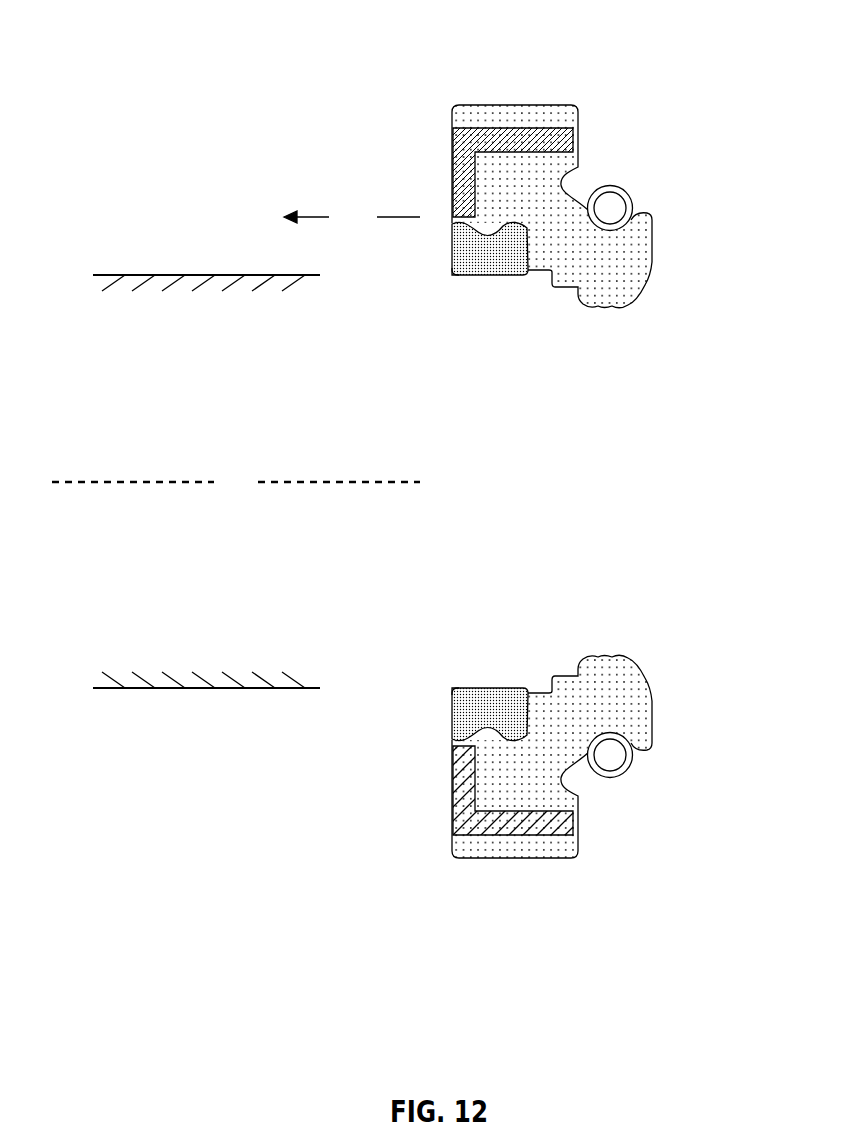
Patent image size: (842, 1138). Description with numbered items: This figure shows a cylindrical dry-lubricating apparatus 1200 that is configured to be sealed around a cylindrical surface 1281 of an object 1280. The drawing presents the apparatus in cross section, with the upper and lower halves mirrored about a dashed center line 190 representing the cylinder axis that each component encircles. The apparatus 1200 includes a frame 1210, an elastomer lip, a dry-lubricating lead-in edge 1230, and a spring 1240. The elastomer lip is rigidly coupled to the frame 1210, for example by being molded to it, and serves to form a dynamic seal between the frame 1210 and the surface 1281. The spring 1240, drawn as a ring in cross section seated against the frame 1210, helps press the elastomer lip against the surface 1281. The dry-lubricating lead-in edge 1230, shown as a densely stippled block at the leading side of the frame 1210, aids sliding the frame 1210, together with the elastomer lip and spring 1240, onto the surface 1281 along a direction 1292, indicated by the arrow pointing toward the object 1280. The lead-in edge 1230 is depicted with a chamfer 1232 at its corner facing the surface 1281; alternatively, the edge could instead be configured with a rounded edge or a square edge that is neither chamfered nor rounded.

The cylindrical dry-lubricating apparatus 1200 is at (690, 74).
The frame 1210 is at (453, 163).
The dry-lubricating lead-in edge 1230 is at (506, 264).
The chamfer 1232 is at (453, 275).
The spring 1240 is at (622, 188).
The object 1280 is at (205, 331).
The cylindrical surface 1281 is at (200, 273).
The direction 1292 is at (352, 218).
The axis of symmetry 190 is at (236, 482).